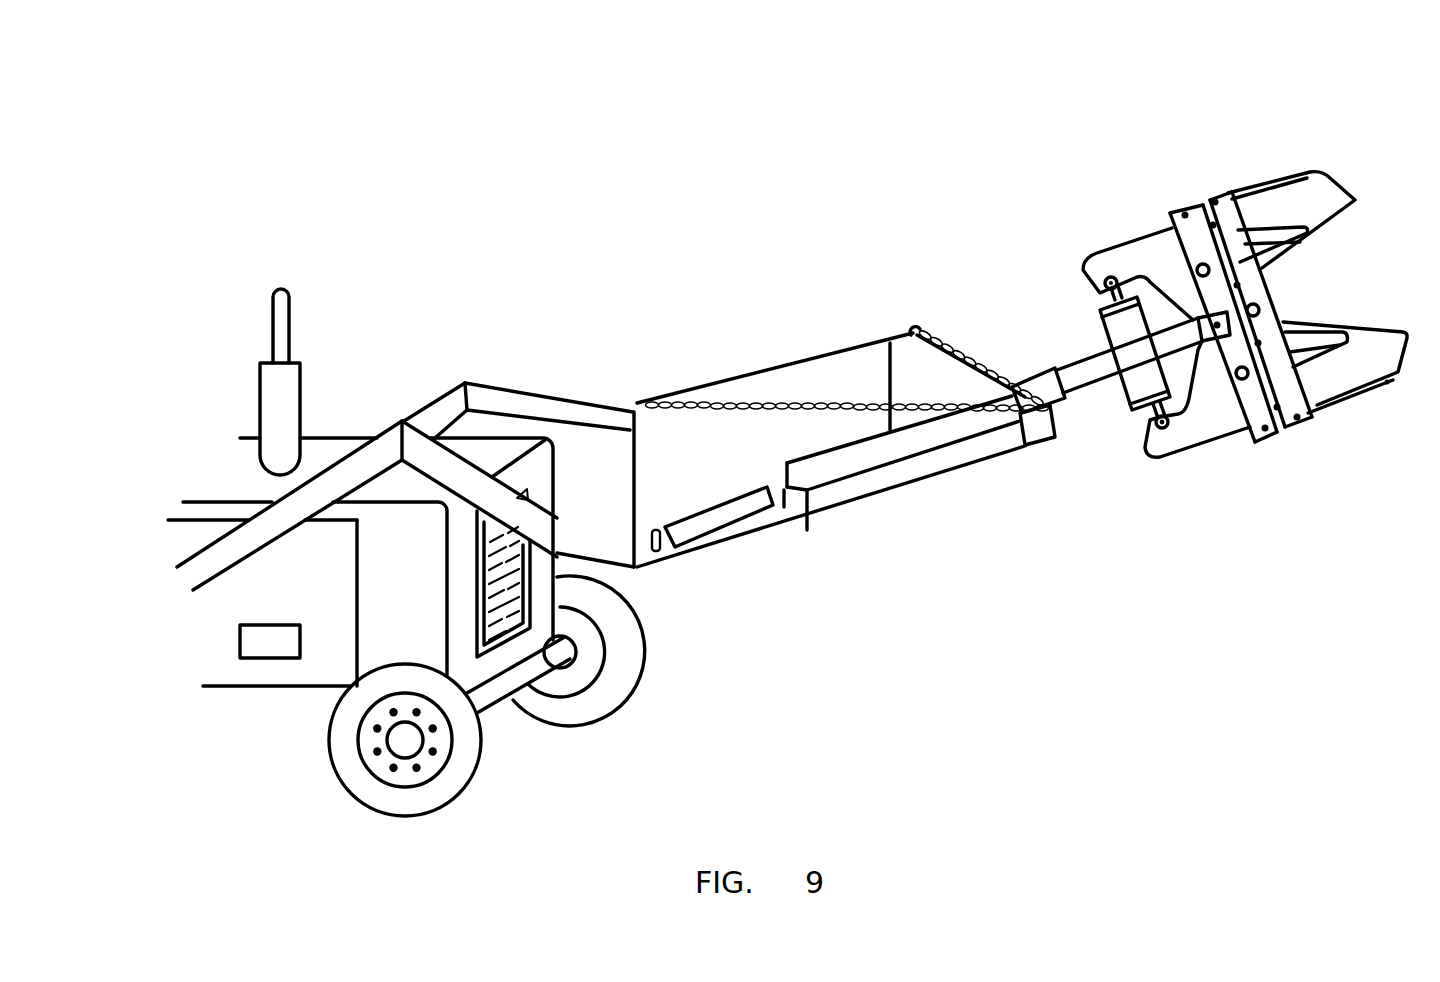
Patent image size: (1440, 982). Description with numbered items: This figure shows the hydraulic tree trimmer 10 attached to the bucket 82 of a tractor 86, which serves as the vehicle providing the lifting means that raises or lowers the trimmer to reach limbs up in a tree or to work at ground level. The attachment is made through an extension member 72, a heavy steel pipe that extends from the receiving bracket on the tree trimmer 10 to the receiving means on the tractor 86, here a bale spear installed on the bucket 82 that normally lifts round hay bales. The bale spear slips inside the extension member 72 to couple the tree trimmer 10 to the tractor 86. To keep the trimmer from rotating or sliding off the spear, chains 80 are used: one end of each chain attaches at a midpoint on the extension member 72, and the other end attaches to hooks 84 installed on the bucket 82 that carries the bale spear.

The tree trimmer 10 is at (1238, 175).
The extension member 72 is at (830, 452).
The chains 80 is at (861, 402).
The bucket 82 is at (600, 502).
The hooks 84 is at (635, 405).
The tractor 86 is at (472, 447).